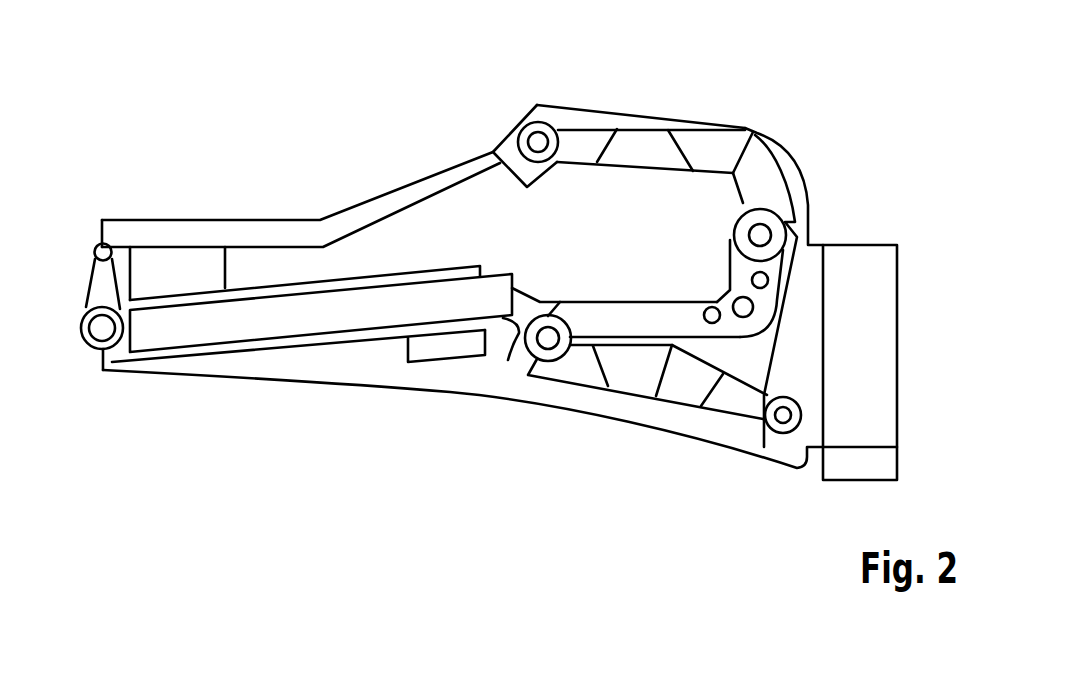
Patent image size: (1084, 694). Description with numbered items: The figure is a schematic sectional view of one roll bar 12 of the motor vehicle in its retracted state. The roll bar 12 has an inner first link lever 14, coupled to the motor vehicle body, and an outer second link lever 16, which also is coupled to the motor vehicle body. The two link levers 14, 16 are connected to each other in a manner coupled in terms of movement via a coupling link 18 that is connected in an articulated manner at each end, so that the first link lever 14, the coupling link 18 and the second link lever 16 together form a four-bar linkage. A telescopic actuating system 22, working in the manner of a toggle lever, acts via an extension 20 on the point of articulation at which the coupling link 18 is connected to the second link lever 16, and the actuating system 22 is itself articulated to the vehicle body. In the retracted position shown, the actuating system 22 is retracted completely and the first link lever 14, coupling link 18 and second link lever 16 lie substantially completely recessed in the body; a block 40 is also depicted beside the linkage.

The roll bar 12 is at (740, 90).
The inner first link lever 14 is at (638, 142).
The outer second link lever 16 is at (680, 385).
The coupling link 18 is at (617, 322).
The extension 20 is at (505, 318).
The telescopic actuating system 22 is at (295, 318).
The mounting block 40 is at (833, 172).